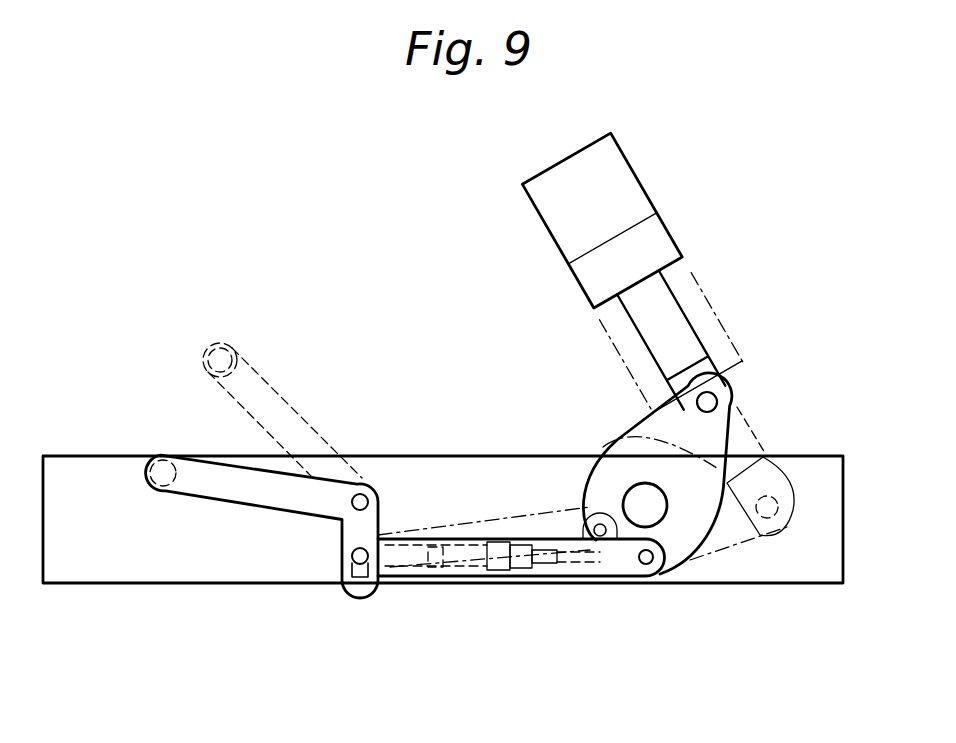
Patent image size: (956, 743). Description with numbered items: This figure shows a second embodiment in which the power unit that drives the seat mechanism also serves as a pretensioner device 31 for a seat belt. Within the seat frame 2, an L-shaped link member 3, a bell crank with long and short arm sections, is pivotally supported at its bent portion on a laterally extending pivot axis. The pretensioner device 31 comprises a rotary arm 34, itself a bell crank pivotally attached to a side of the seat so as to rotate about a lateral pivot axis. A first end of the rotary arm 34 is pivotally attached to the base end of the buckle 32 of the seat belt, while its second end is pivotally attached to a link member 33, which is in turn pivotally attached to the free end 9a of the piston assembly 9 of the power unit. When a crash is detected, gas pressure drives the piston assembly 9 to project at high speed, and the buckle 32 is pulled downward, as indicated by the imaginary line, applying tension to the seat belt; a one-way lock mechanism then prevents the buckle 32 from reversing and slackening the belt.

The seat frame 2 is at (802, 465).
The L-shaped link member 3 is at (247, 468).
The piston assembly 9 is at (462, 567).
The free end 9a is at (383, 558).
The pretensioner device 31 is at (705, 233).
The buckle 32 is at (637, 192).
The link member 33 is at (577, 553).
The rotary arm 34 is at (683, 545).